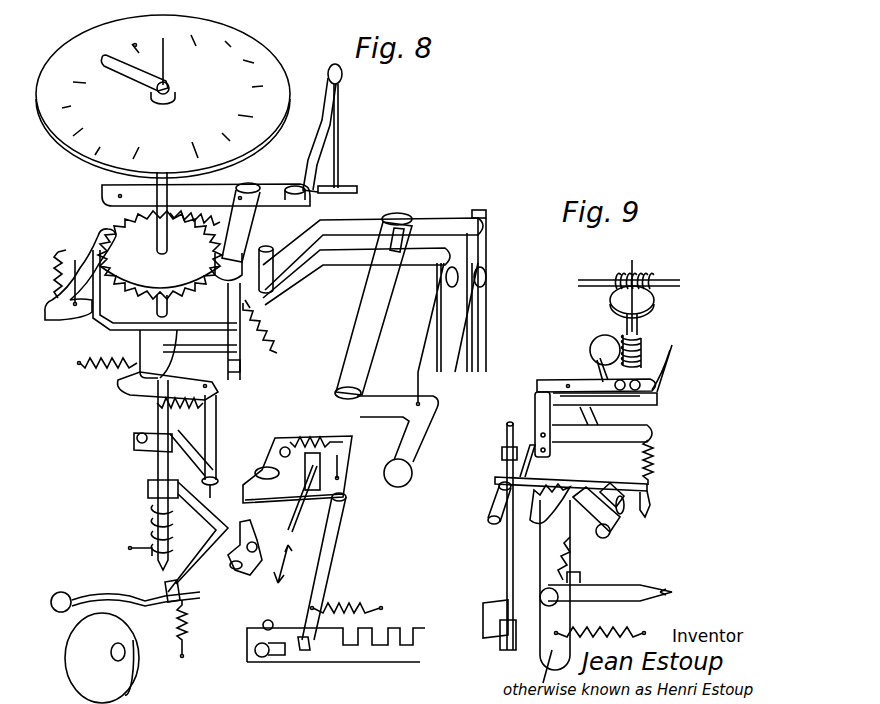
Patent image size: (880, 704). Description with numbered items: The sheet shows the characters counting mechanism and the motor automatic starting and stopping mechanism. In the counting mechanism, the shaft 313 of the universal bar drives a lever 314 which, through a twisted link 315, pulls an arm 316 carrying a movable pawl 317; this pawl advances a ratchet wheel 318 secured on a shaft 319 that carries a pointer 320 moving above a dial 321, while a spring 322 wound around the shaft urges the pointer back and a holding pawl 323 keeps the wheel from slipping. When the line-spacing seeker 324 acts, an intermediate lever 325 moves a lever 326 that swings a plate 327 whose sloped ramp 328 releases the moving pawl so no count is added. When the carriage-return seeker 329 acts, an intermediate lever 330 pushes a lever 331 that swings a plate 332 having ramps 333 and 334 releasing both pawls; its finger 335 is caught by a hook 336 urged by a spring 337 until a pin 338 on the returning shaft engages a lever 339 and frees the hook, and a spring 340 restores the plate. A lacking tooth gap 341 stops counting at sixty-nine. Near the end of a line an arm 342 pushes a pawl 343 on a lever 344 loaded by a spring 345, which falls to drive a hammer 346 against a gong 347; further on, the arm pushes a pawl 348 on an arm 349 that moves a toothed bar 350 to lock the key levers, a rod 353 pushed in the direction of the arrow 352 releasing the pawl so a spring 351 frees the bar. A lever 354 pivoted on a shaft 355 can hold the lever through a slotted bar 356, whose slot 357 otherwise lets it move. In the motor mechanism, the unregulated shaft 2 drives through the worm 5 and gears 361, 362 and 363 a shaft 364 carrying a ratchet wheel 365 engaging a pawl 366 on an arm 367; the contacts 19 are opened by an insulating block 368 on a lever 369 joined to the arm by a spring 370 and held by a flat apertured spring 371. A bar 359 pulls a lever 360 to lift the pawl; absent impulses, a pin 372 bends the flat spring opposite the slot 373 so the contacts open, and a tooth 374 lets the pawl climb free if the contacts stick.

In FIG. 8, the pointer 320 is at (100, 62).
In FIG. 8, the dial 321 is at (245, 46).
In FIG. 8, the shaft 313 is at (344, 186).
In FIG. 8, the lever 314 is at (338, 145).
In FIG. 8, the twisted link 315 is at (333, 102).
In FIG. 8, the arm 316 is at (228, 184).
In FIG. 8, the movable pawl 317 is at (250, 220).
In FIG. 8, the ratchet wheel 318 is at (110, 231).
In FIG. 8, the shaft 319 is at (160, 468).
In FIG. 8, the spring 322 is at (142, 550).
In FIG. 8, the holding pawl 323 is at (70, 313).
In FIG. 8, the seeker 324 is at (436, 340).
In FIG. 8, the intermediate lever 325 is at (437, 297).
In FIG. 8, the lever 326 is at (322, 275).
In FIG. 8, the plate 327 is at (245, 308).
In FIG. 8, the sloped ramp 328 is at (233, 365).
In FIG. 8, the seeker 329 is at (467, 316).
In FIG. 8, the intermediate lever 330 is at (481, 348).
In FIG. 8, the lever 331 is at (450, 222).
In FIG. 8, the plate 332 is at (266, 246).
In FIG. 8, the ramp 333 is at (233, 338).
In FIG. 8, the ramp 334 is at (112, 318).
In FIG. 8, the finger 335 is at (118, 381).
In FIG. 8, the hook 336 is at (215, 386).
In FIG. 8, the spring 337 is at (153, 405).
In FIG. 8, the pin 338 is at (134, 446).
In FIG. 8, the lever 339 is at (183, 452).
In FIG. 8, the spring 340 is at (84, 366).
In FIG. 8, the lacking tooth gap 341 is at (143, 290).
In FIG. 8, the arm 342 is at (157, 504).
In FIG. 8, the pawl 343 is at (250, 528).
In FIG. 8, the lever 344 is at (216, 577).
In FIG. 8, the spring 345 is at (185, 640).
In FIG. 8, the hammer 346 is at (62, 592).
In FIG. 8, the gong 347 is at (136, 680).
In FIG. 8, the pawl 348 is at (278, 446).
In FIG. 8, the arm 349 is at (348, 460).
In FIG. 8, the toothed bar 350 is at (318, 657).
In FIG. 8, the spring 351 is at (347, 594).
In FIG. 8, the arrow 352 is at (310, 571).
In FIG. 8, the rod 353 is at (298, 512).
In FIG. 8, the lever 354 is at (418, 441).
In FIG. 8, the shaft 355 is at (423, 389).
In FIG. 8, the slotted bar 356 is at (357, 357).
In FIG. 8, the slot 357 is at (380, 222).
In FIG. 9, the unregulated shaft 2 is at (608, 280).
In FIG. 9, the worm 5 is at (652, 277).
In FIG. 9, the contacts 19 is at (542, 380).
In FIG. 9, the bar 359 is at (608, 603).
In FIG. 9, the lever 360 is at (582, 578).
In FIG. 9, the gear 361 is at (612, 298).
In FIG. 9, the gear 362 is at (638, 350).
In FIG. 9, the gear 363 is at (597, 345).
In FIG. 9, the shaft 364 is at (592, 377).
In FIG. 9, the ratchet wheel 365 is at (530, 538).
In FIG. 9, the pawl 366 is at (610, 513).
In FIG. 9, the arm 367 is at (600, 482).
In FIG. 9, the insulating block 368 is at (535, 405).
In FIG. 9, the lever 369 is at (613, 426).
In FIG. 9, the spring 370 is at (651, 462).
In FIG. 9, the flat apertured spring 371 is at (508, 528).
In FIG. 9, the pin 372 is at (490, 503).
In FIG. 9, the slot 373 is at (507, 428).
In FIG. 9, the tooth 374 is at (575, 560).